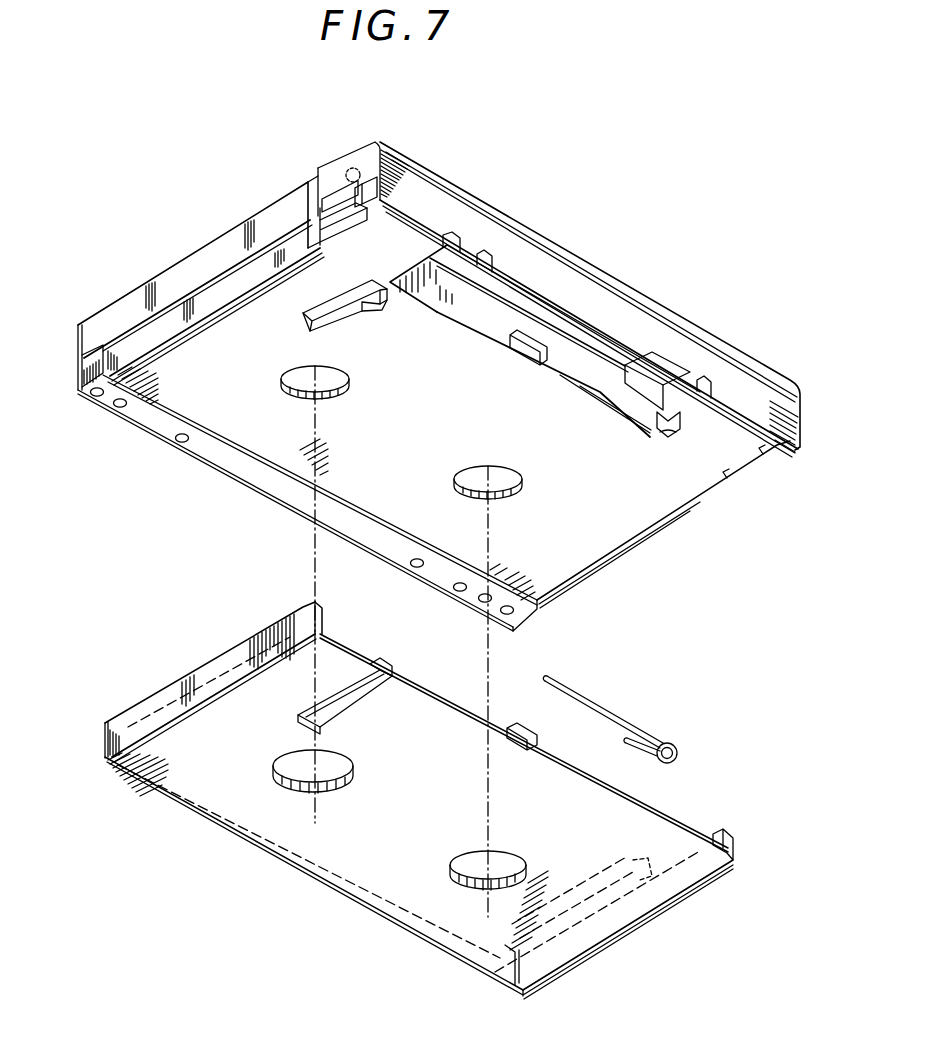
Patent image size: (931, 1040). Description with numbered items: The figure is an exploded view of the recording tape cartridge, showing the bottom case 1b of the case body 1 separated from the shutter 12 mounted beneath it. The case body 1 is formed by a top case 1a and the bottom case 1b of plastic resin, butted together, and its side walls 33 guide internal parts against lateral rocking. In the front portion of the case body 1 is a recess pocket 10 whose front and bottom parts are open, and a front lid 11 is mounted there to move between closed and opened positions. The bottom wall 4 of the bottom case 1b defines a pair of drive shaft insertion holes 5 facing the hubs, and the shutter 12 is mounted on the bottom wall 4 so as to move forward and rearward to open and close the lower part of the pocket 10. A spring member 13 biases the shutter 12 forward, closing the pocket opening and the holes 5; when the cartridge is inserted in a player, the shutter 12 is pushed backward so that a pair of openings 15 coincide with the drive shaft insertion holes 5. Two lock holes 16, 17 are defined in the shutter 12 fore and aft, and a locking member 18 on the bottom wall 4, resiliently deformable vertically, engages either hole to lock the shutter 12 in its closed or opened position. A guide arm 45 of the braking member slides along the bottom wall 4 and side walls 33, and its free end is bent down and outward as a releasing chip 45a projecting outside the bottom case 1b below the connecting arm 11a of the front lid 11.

The case body 1 is at (177, 252).
The top case 1a is at (80, 333).
The bottom case 1b is at (80, 381).
The side walls 33 is at (215, 296).
The front lid 11 is at (427, 193).
The connecting arm 11a is at (342, 172).
The guide arm 45 is at (340, 227).
The releasing chip 45a is at (370, 218).
The bottom wall 4 is at (658, 493).
The drive shaft insertion holes 5 is at (343, 387).
The recess pocket 10 is at (477, 304).
The locking member 18 is at (380, 303).
The shutter 12 is at (267, 823).
The openings 15 is at (330, 772).
The lock hole 16 is at (374, 669).
The lock hole 17 is at (337, 705).
The spring member 13 is at (610, 713).